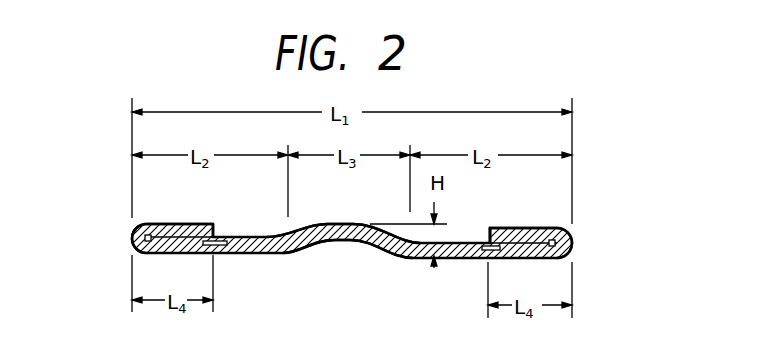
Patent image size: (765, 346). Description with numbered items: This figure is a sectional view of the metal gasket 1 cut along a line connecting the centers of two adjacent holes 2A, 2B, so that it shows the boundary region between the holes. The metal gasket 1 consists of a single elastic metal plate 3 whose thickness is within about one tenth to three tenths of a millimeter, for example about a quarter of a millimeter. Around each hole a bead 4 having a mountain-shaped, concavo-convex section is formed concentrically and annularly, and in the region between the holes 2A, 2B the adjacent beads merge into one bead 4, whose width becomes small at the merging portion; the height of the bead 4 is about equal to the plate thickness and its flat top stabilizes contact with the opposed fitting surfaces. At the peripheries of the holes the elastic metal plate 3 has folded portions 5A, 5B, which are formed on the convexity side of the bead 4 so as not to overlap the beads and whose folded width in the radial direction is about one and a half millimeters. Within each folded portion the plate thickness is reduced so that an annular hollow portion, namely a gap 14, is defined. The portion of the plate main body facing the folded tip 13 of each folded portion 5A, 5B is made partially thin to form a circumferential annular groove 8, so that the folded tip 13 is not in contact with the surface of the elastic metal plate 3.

The metal gasket 1 is at (399, 264).
The hole 2A is at (130, 247).
The hole 2B is at (575, 238).
The elastic metal plate 3 is at (433, 258).
The bead 4 is at (345, 225).
The folded portion 5A is at (172, 224).
The folded portion 5B is at (528, 228).
The annular groove 8 is at (226, 257).
The folded tip 13 is at (215, 228).
The gap 14 is at (130, 236).